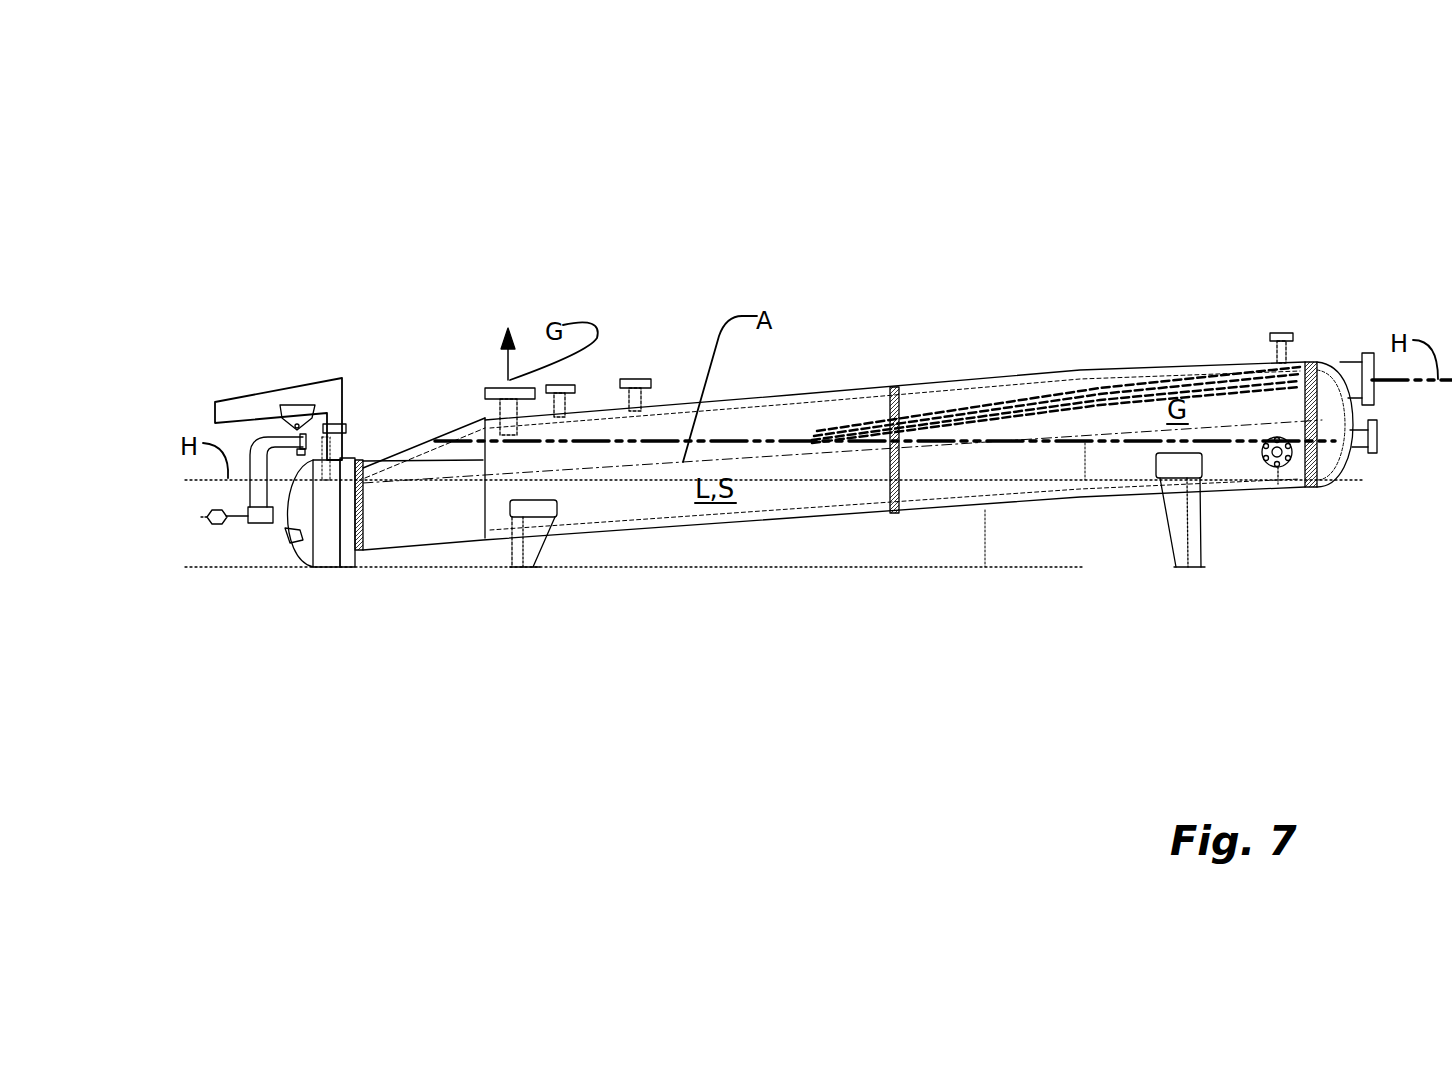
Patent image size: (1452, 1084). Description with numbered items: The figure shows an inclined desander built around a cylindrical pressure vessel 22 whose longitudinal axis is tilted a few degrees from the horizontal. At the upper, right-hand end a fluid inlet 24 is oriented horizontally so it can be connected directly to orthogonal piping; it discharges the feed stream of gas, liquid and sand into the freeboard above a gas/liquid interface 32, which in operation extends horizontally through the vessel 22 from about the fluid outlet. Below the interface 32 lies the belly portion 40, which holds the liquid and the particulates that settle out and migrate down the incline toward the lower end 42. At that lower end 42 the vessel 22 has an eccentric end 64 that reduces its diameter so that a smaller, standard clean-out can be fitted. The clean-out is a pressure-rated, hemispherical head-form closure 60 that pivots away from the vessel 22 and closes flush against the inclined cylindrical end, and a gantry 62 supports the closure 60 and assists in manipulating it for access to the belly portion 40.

The vessel 22 is at (914, 386).
The fluid inlet 24 is at (1360, 362).
The gas/liquid interface 32 is at (972, 440).
The belly portion 40 is at (608, 500).
The lower end 42 is at (340, 545).
The closure 60 is at (310, 547).
The gantry 62 is at (259, 402).
The eccentric end 64 is at (386, 458).